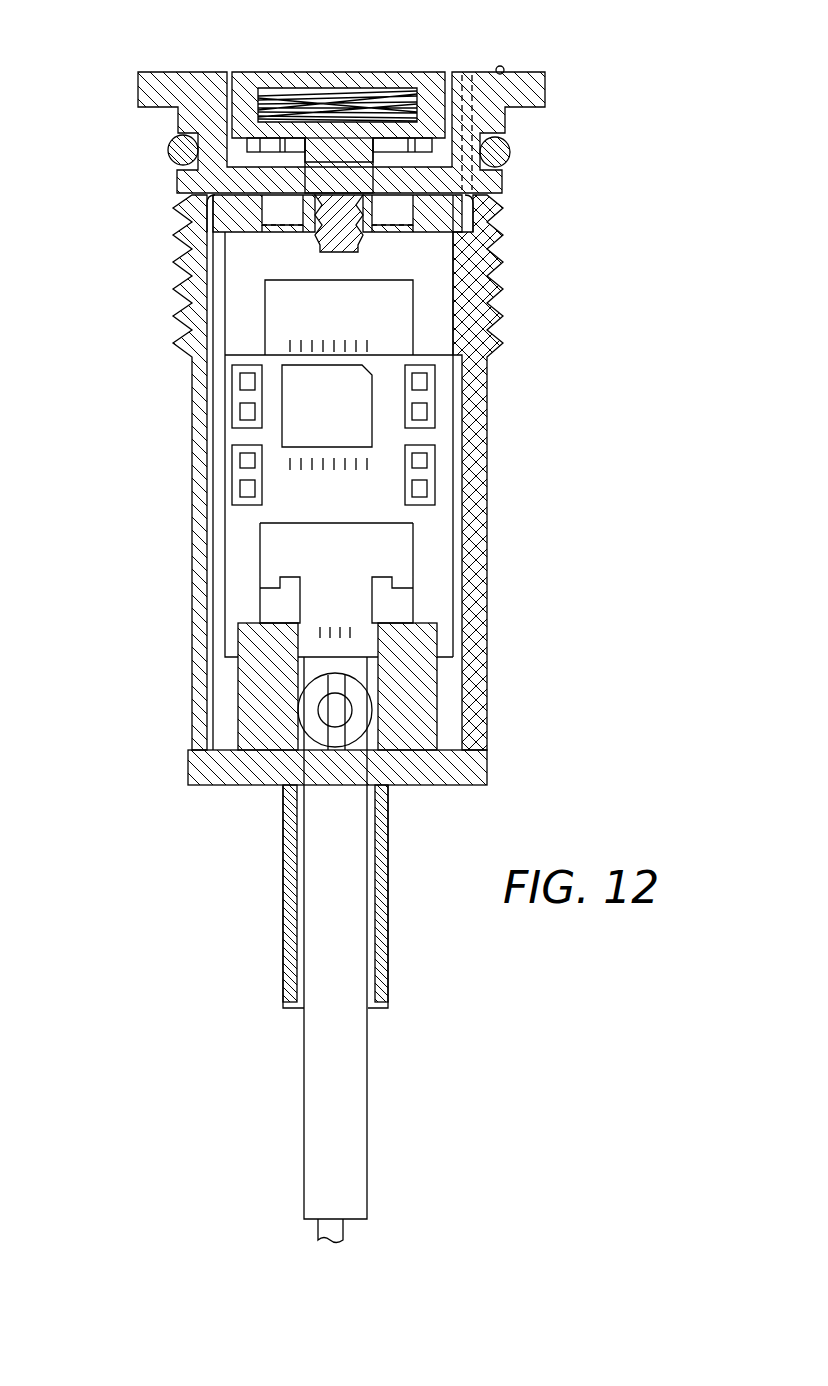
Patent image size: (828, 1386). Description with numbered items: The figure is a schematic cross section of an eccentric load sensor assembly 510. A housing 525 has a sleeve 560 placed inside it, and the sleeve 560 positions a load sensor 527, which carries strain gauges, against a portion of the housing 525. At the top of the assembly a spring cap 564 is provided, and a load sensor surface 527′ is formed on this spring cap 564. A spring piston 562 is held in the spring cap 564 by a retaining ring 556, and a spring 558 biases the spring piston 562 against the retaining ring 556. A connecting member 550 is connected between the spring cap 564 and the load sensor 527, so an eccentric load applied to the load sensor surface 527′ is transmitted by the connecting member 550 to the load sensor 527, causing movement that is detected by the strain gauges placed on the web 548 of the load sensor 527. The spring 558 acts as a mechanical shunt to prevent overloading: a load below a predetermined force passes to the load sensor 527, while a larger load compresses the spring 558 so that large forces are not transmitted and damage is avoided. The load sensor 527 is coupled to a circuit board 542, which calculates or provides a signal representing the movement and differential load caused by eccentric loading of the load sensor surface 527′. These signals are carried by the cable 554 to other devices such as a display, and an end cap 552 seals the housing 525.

The eccentric load sensor assembly 510 is at (576, 150).
The housing 525 is at (487, 537).
The load sensor 527 is at (430, 233).
The load sensor surface 527′ is at (338, 72).
The circuit board 542 is at (320, 501).
The web 548 is at (273, 232).
The connecting member 550 is at (318, 242).
The end cap 552 is at (285, 813).
The cable 554 is at (337, 1093).
The retaining ring 556 is at (258, 143).
The spring 558 is at (400, 102).
The sleeve 560 is at (215, 322).
The spring piston 562 is at (328, 150).
The spring cap 564 is at (433, 78).